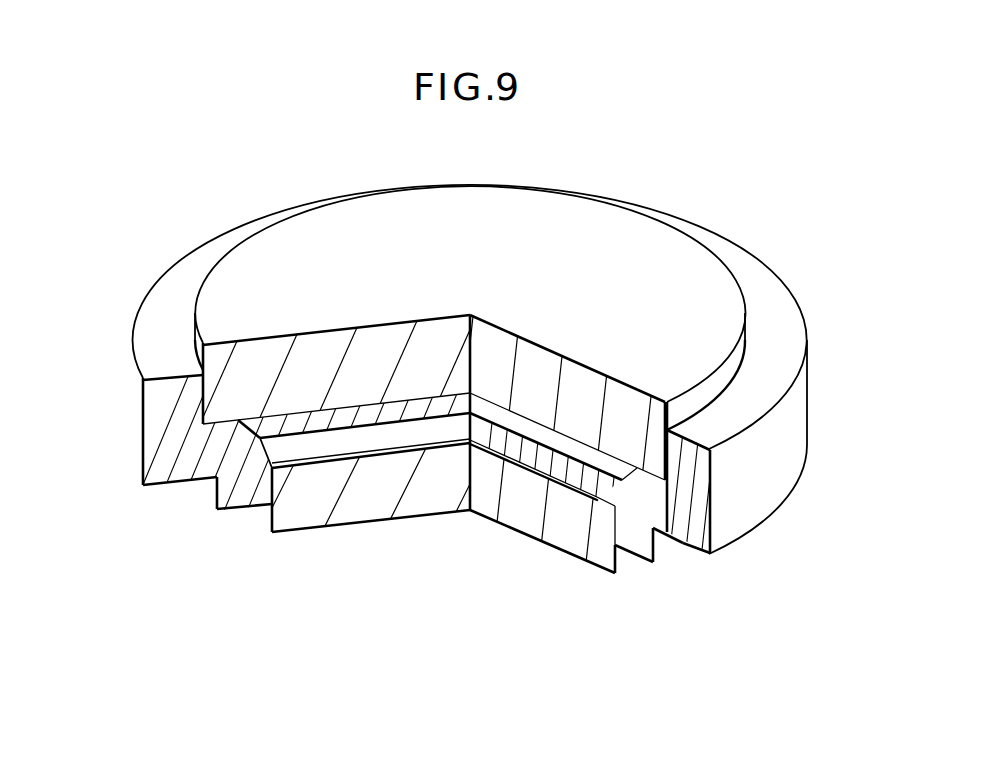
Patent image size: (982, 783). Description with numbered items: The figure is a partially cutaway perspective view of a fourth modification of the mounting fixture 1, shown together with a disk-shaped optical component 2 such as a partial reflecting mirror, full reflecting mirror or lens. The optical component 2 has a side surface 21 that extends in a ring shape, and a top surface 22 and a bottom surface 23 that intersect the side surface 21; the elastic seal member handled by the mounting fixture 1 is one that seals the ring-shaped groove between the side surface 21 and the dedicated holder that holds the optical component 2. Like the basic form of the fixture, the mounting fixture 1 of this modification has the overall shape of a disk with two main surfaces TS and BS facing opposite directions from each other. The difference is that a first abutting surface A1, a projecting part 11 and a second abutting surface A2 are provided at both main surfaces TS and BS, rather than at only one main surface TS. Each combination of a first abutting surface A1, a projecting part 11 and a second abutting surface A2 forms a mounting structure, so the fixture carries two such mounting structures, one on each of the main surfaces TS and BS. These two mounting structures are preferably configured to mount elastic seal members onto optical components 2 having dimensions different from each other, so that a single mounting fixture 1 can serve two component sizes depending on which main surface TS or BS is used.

The mounting fixture 1 is at (158, 250).
The optical component 2 is at (601, 234).
The projecting part 11 is at (190, 389).
The side surface 21 is at (668, 430).
The top surface 22 is at (334, 408).
The bottom surface 23 is at (298, 405).
The first abutting surface A1 is at (230, 425).
The second abutting surface A2 is at (193, 376).
The main surface TS is at (781, 305).
The main surface BS is at (695, 580).